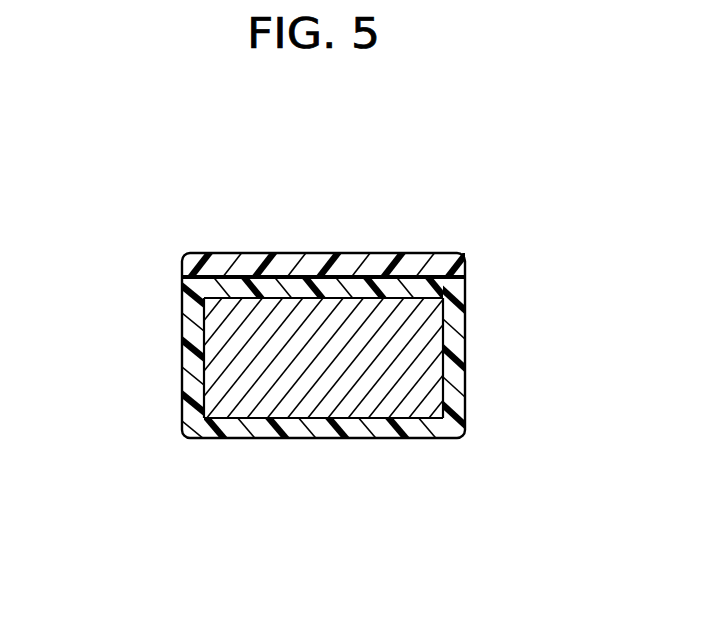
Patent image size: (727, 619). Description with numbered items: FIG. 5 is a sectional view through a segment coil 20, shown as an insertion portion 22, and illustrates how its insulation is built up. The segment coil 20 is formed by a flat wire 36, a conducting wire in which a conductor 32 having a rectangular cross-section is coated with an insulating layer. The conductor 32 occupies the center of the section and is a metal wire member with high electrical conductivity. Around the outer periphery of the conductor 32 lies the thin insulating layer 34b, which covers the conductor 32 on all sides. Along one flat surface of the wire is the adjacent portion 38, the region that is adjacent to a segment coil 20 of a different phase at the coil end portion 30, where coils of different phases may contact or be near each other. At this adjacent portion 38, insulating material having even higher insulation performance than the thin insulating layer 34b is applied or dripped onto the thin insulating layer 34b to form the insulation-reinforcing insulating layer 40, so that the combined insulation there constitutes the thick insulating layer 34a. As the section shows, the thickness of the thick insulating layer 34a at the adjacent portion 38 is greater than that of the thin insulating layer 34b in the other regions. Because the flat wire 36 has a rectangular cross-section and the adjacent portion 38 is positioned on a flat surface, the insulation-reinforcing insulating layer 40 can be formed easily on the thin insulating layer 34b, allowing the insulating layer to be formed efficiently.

The segment coil 20 is at (511, 226).
The flat wire 36 is at (329, 348).
The insertion portion 22 is at (299, 442).
The coil end portion 30 is at (336, 428).
The conductor 32 is at (365, 323).
The thick insulating layer 34a is at (260, 251).
The thin insulating layer 34b is at (466, 344).
The adjacent portion 38 is at (431, 263).
The insulation-reinforcing insulating layer 40 is at (183, 267).